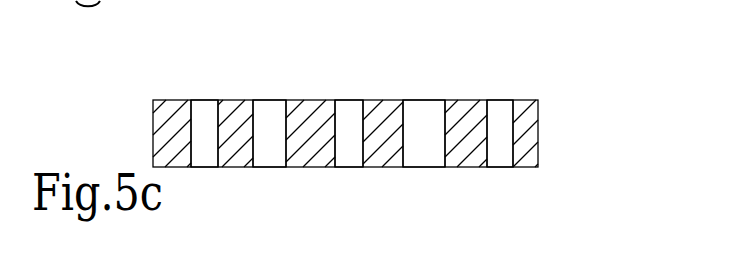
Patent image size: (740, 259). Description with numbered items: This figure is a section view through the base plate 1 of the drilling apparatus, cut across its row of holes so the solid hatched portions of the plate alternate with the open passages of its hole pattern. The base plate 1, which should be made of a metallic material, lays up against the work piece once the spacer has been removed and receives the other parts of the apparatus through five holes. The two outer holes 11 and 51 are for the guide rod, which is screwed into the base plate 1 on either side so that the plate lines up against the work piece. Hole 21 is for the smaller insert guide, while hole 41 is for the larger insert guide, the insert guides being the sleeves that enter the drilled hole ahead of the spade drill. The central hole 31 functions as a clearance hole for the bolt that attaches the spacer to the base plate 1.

The base plate 1 is at (538, 132).
The hole 11 is at (207, 118).
The hole 21 is at (270, 117).
The hole 31 is at (350, 117).
The hole 41 is at (428, 117).
The hole 51 is at (498, 110).